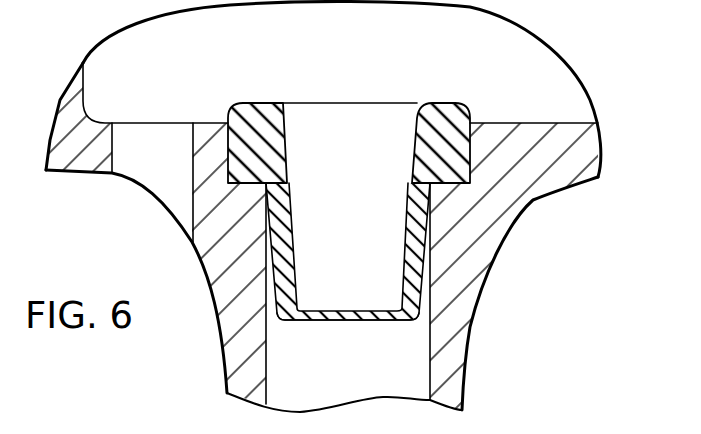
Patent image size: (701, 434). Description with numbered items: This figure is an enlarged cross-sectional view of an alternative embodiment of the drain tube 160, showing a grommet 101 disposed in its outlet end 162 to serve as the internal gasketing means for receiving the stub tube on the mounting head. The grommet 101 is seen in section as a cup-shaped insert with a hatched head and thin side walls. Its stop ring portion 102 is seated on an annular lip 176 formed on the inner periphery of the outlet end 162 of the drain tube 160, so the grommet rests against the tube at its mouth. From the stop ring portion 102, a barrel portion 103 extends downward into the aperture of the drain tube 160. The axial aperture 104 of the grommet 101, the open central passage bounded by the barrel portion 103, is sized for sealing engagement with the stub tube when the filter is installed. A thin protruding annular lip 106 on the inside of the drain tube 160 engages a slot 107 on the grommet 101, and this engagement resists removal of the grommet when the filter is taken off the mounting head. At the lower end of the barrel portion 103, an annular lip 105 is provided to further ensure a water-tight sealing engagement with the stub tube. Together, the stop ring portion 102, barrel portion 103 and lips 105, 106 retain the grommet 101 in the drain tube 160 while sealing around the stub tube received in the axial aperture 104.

The grommet 101 is at (383, 200).
The stop ring portion 102 is at (449, 150).
The barrel portion 103 is at (282, 242).
The axial aperture 104 is at (380, 113).
The annular lip 105 is at (298, 320).
The thin protruding annular lip 106 is at (264, 190).
The slot 107 is at (403, 187).
The drain tube 160 is at (349, 206).
The outlet end 162 is at (552, 198).
The annular lip 176 is at (447, 197).